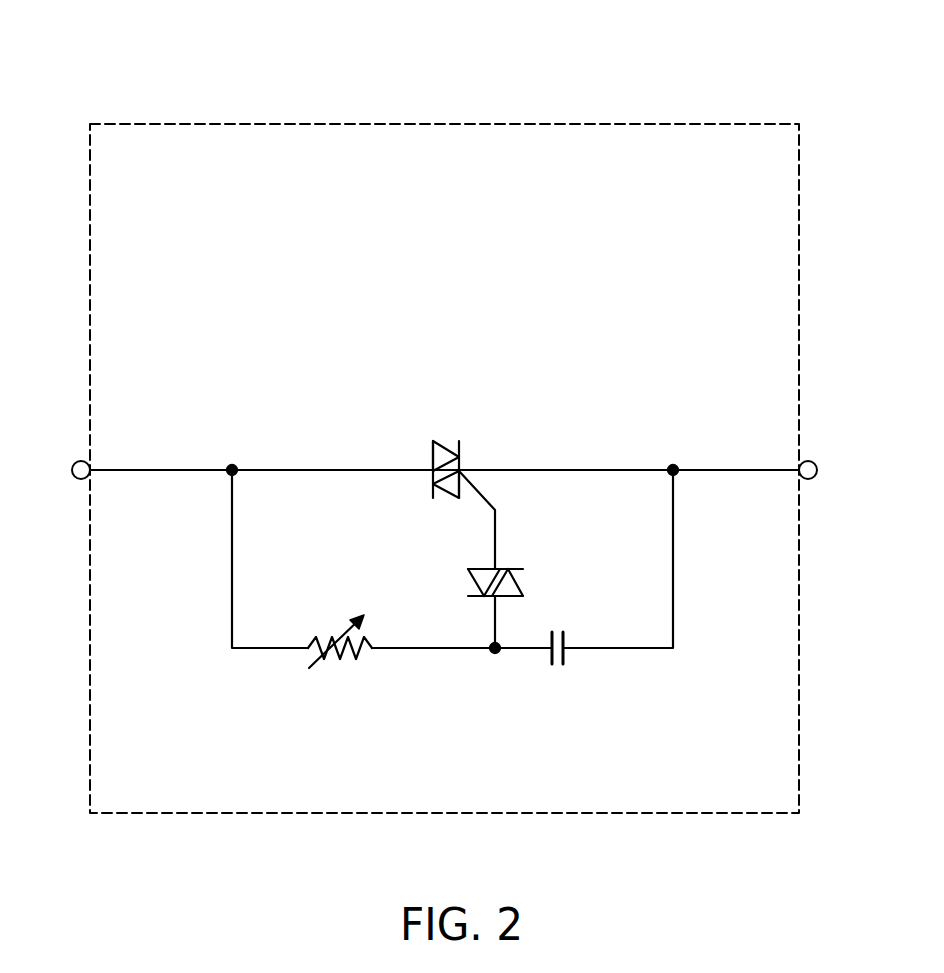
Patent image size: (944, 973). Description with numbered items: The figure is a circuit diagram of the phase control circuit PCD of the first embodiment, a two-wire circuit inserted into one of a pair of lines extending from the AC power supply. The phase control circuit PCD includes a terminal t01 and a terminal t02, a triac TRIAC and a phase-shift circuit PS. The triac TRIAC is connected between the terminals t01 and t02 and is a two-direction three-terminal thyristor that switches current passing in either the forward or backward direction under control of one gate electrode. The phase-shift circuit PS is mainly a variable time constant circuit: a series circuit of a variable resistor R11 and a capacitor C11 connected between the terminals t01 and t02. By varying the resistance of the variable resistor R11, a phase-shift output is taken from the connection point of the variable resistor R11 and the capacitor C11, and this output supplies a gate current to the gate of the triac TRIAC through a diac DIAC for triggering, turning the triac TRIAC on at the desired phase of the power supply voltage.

The phase control circuit PCD is at (443, 124).
The terminal t01 is at (72, 466).
The terminal t02 is at (816, 463).
The triac TRIAC is at (440, 440).
The diac DIAC is at (525, 578).
The phase-shift circuit PS is at (473, 655).
The variable resistor R11 is at (348, 658).
The capacitor C11 is at (555, 667).